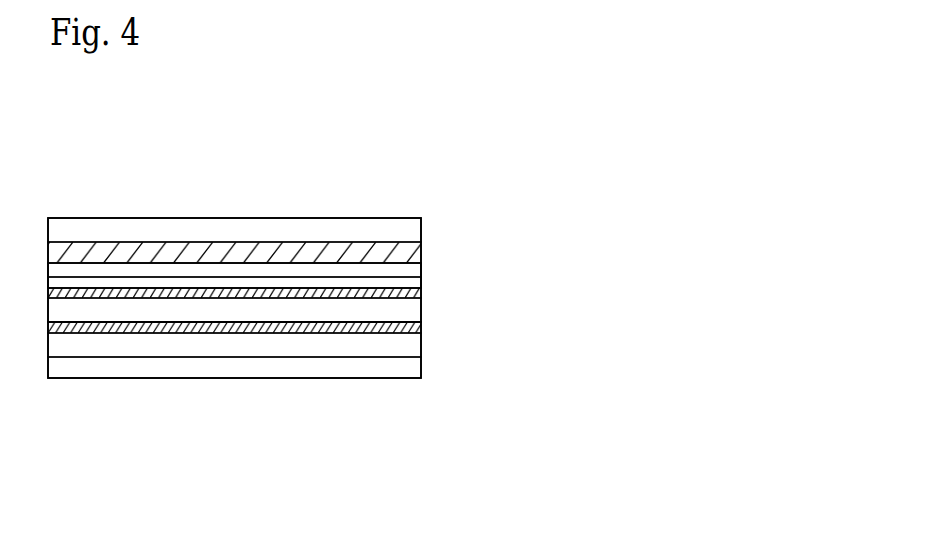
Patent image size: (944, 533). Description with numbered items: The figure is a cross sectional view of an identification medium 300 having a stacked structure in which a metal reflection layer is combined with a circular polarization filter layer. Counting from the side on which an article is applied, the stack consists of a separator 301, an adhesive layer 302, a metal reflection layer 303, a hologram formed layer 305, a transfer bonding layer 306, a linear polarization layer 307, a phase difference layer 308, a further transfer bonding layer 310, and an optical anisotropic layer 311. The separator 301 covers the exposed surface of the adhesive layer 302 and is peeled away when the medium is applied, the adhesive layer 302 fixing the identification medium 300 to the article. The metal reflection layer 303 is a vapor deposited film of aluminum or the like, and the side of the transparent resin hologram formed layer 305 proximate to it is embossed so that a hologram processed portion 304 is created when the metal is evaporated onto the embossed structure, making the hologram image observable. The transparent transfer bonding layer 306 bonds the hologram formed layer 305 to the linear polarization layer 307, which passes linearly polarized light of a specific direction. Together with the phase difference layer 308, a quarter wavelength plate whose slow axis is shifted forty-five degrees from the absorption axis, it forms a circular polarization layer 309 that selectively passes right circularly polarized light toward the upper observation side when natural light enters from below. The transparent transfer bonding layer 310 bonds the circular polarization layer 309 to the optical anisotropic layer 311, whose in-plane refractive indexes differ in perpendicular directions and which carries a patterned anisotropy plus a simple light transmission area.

The identification medium 300 is at (120, 214).
The separator 301 is at (397, 372).
The adhesive layer 302 is at (405, 345).
The metal reflection layer 303 is at (92, 332).
The hologram processed portion 304 is at (158, 324).
The hologram formed layer 305 is at (202, 312).
The transfer bonding layer 306 is at (417, 298).
The linear polarization layer 307 is at (415, 282).
The phase difference layer 308 is at (415, 272).
The circular polarization layer 309 is at (645, 330).
The transfer bonding layer 310 is at (415, 253).
The optical anisotropic layer 311 is at (421, 224).